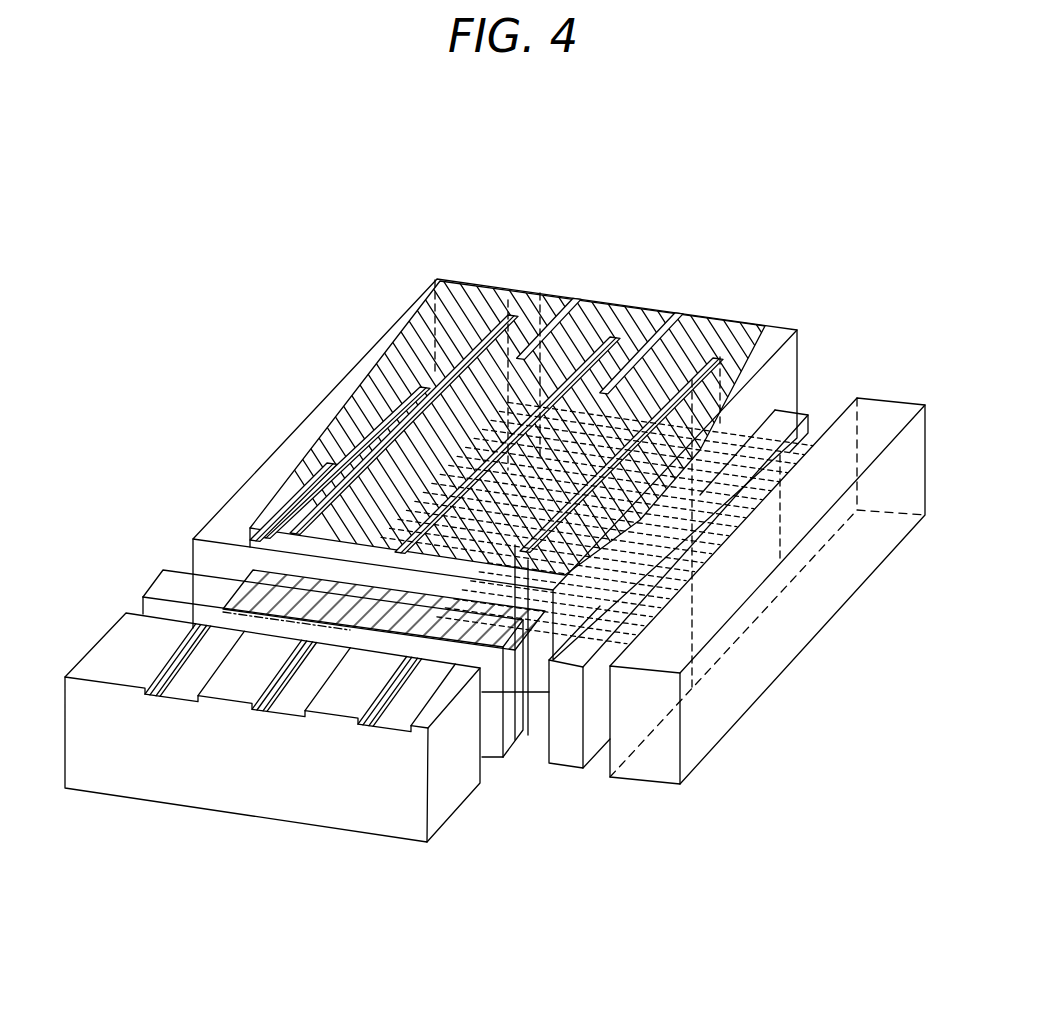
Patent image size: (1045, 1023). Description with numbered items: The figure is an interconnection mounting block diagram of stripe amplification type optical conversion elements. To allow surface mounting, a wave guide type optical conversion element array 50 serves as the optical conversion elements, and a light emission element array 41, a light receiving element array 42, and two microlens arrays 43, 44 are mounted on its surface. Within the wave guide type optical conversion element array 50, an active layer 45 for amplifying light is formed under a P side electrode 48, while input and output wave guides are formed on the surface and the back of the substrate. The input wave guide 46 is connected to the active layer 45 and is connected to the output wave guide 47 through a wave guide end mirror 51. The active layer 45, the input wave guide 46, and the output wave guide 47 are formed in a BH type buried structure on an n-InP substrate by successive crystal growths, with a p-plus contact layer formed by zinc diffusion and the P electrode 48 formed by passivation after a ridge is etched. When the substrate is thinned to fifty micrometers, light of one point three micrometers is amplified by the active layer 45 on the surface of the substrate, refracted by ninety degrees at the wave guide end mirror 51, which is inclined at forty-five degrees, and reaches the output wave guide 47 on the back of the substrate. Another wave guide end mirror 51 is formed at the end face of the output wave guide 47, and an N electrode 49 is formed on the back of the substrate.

The light emission element array 41 is at (272, 740).
The light receiving element array 42 is at (767, 591).
The microlens array 43 is at (513, 733).
The microlens array 44 is at (678, 620).
The active layer 45 is at (454, 434).
The input wave guide 46 is at (247, 502).
The output wave guide 47 is at (813, 430).
The P side electrode 48 is at (561, 404).
The N electrode 49 is at (708, 496).
The wave guide type optical conversion element array 50 is at (495, 453).
The wave guide end mirror 51 is at (540, 293).